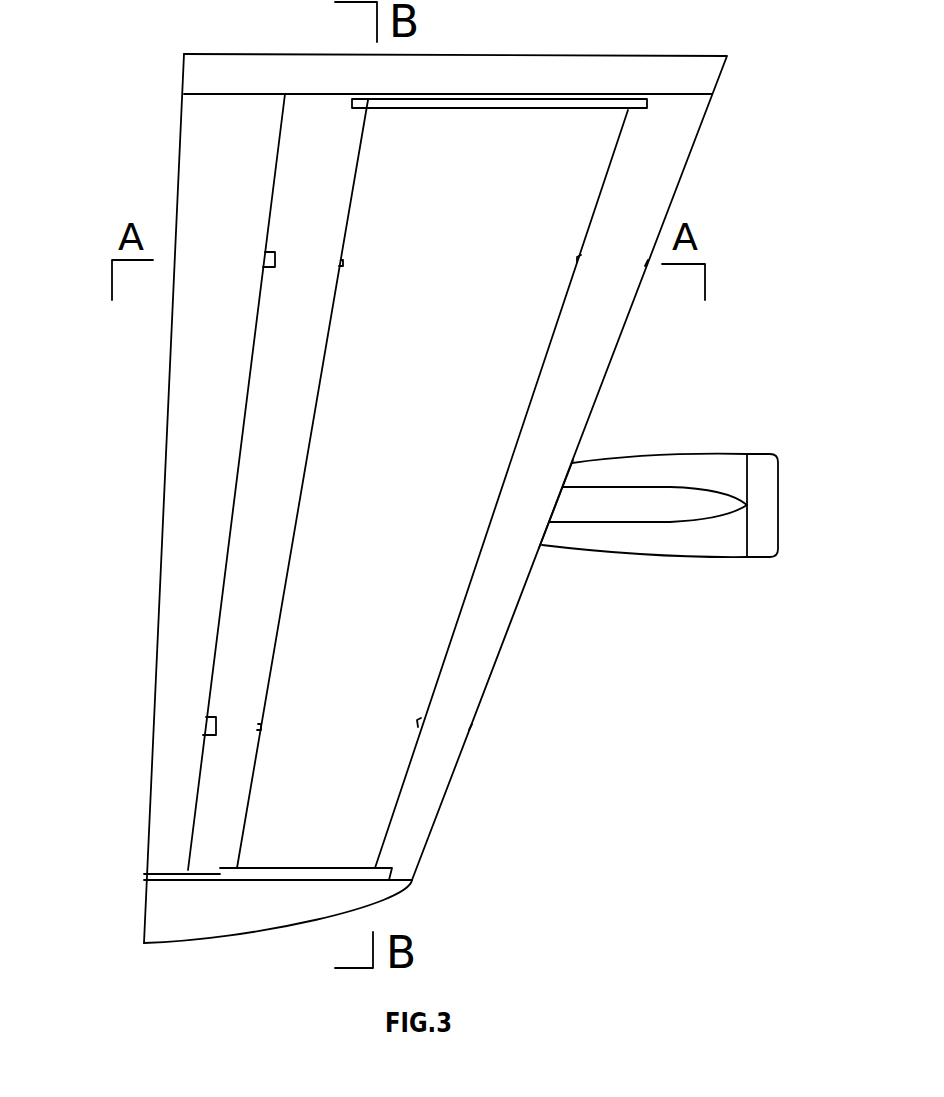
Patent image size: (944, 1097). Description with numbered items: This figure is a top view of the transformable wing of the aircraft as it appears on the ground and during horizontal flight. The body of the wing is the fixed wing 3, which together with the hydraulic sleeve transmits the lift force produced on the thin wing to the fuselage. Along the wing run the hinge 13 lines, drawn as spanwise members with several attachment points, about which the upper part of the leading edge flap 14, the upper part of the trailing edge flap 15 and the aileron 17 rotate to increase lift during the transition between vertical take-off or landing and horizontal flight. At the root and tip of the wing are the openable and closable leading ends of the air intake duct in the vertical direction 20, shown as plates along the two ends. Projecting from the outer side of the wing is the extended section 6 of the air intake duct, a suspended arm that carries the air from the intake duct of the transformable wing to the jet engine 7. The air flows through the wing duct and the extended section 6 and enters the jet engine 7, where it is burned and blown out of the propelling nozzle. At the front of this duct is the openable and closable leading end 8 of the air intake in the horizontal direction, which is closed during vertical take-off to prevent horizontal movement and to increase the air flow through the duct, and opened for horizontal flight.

The fixed wing 3 is at (380, 543).
The extended section of the air intake duct 6 is at (601, 503).
The jet engine 7 is at (684, 537).
The leading end of the air intake duct 8 is at (762, 503).
The hinge 13 is at (338, 263).
The upper part of the leading edge flap 14 is at (523, 503).
The upper part of the trailing edge flap 15 is at (248, 633).
The aileron 17 is at (203, 447).
The leading end of the air intake duct in vertical direction 20 is at (500, 99).